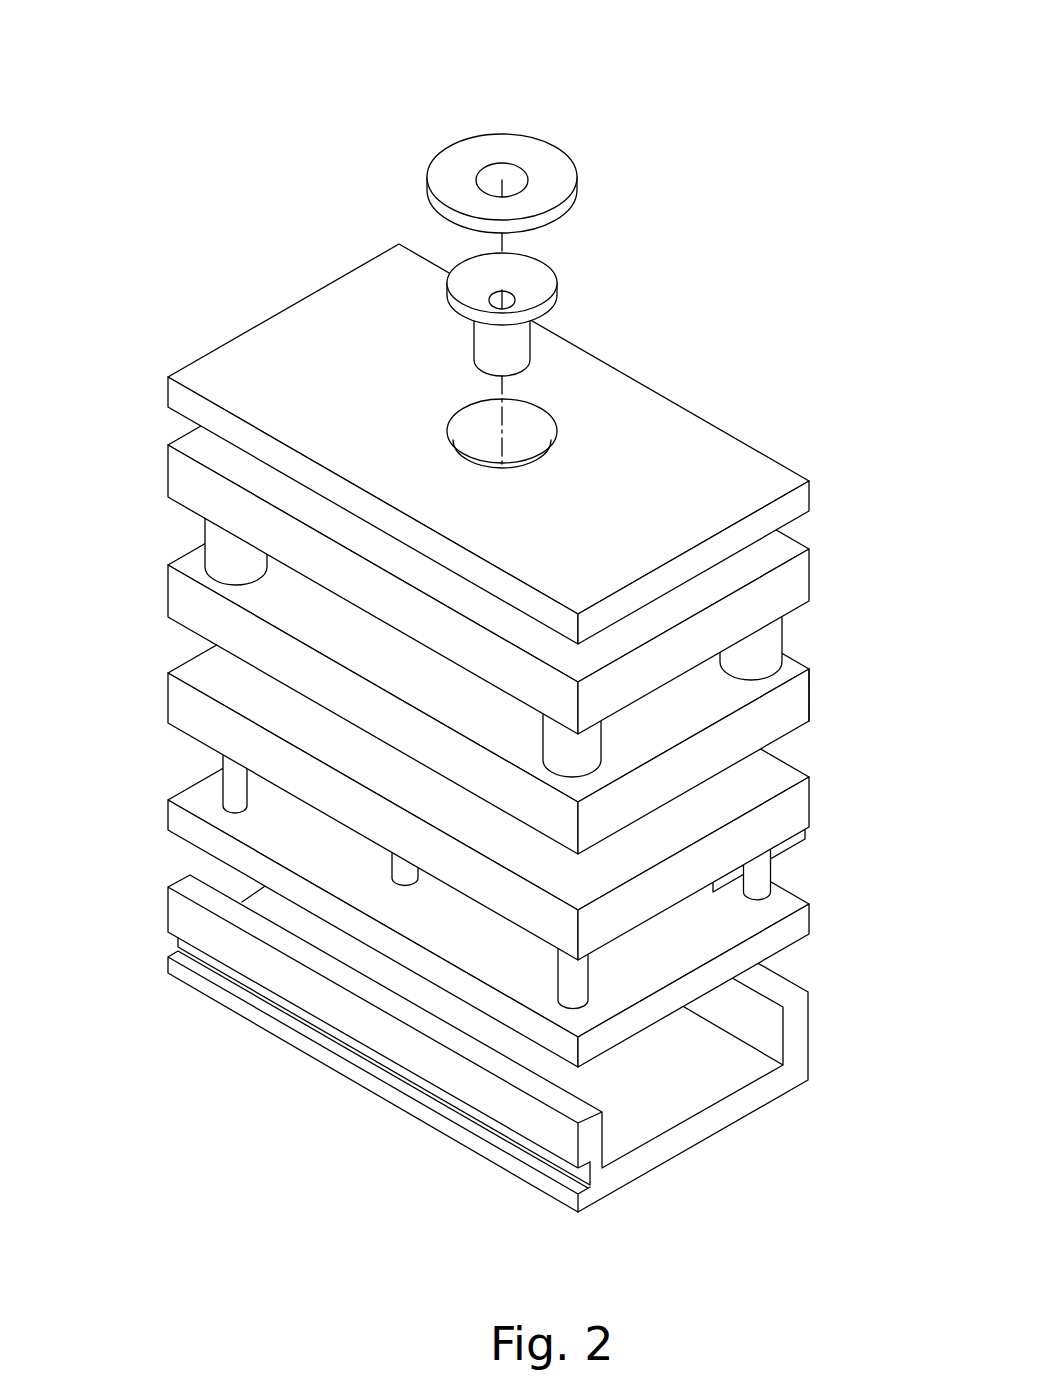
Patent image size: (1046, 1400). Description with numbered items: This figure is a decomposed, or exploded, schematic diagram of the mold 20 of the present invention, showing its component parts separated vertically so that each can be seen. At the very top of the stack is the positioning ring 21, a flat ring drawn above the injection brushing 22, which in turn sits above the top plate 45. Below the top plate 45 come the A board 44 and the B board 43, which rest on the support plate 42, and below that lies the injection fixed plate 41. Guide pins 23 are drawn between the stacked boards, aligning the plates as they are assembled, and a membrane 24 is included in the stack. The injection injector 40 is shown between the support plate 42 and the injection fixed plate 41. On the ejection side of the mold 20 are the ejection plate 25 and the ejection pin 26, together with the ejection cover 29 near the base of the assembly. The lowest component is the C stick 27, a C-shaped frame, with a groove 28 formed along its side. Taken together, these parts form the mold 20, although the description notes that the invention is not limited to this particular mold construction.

The mold 20 is at (755, 97).
The positioning ring 21 is at (580, 198).
The injection brushing 22 is at (560, 290).
The guide pins 23 is at (783, 637).
The membrane 24 is at (808, 660).
The ejection plate 25 is at (788, 845).
The ejection pin 26 is at (773, 878).
The C stick 27 is at (810, 1040).
The groove 28 is at (175, 950).
The ejection cover 29 is at (247, 1022).
The injection injector 40 is at (403, 868).
The injection fixed plate 41 is at (168, 815).
The support plate 42 is at (168, 699).
The B board 43 is at (168, 597).
The A board 44 is at (168, 477).
The top plate 45 is at (168, 392).